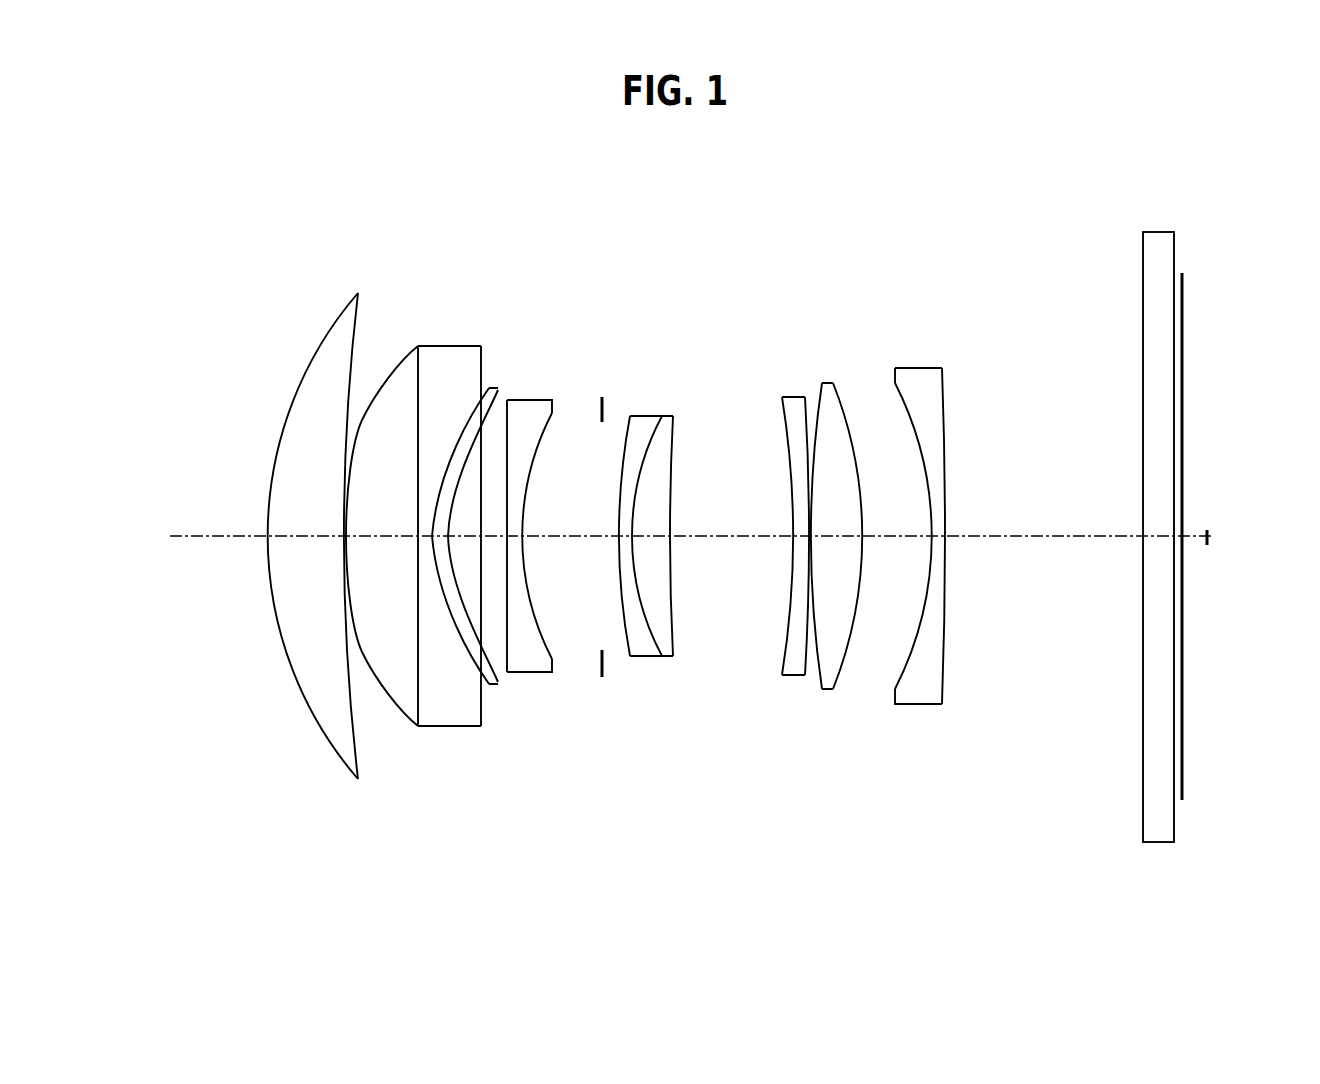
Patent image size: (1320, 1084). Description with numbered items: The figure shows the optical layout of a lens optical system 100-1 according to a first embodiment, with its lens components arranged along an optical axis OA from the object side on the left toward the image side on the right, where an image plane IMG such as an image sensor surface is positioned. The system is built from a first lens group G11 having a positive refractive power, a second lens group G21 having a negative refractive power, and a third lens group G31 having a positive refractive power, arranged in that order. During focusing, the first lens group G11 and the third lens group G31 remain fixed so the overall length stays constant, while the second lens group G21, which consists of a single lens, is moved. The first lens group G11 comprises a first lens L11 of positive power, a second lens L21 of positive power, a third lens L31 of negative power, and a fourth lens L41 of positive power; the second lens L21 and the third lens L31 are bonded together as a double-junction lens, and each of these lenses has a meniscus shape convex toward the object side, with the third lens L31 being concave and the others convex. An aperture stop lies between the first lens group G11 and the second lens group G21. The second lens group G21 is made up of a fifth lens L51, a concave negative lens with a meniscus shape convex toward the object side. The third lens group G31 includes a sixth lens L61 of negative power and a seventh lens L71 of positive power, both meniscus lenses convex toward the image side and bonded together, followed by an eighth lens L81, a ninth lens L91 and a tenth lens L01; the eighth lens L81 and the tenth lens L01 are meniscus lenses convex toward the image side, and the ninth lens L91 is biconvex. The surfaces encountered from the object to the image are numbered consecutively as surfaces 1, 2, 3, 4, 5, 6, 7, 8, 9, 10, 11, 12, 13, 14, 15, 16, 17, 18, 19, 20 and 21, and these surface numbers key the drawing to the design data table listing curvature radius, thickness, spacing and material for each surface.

The lens optical system 100-1 is at (670, 167).
The lens surface 1 is at (312, 353).
The lens surface 2 is at (364, 340).
The lens surface 3 is at (402, 355).
The lens surface 4 is at (418, 377).
The lens surface 5 is at (445, 453).
The lens surface 6 is at (460, 430).
The lens surface 7 is at (508, 438).
The lens surface 8 is at (517, 435).
The lens surface 9 is at (532, 455).
The lens surface 10 is at (599, 394).
The lens surface 11 is at (622, 440).
The lens surface 12 is at (645, 445).
The lens surface 13 is at (674, 445).
The lens surface 14 is at (788, 442).
The lens surface 15 is at (806, 440).
The lens surface 16 is at (812, 445).
The lens surface 17 is at (856, 450).
The lens surface 18 is at (913, 440).
The lens surface 19 is at (943, 440).
The lens surface 20 is at (1143, 250).
The lens surface 21 is at (1182, 340).
The first lens L11 is at (326, 547).
The second lens L21 is at (382, 550).
The third lens L31 is at (447, 558).
The fourth lens L41 is at (473, 579).
The fifth lens L51 is at (552, 582).
The sixth lens L61 is at (658, 597).
The seventh lens L71 is at (707, 598).
The eighth lens L81 is at (805, 580).
The ninth lens L91 is at (850, 584).
The tenth lens L01 is at (928, 581).
The first lens group G11 is at (391, 578).
The second lens group G21 is at (553, 613).
The third lens group G31 is at (800, 611).
The optical axis OA is at (220, 537).
The image plane IMG is at (1215, 804).